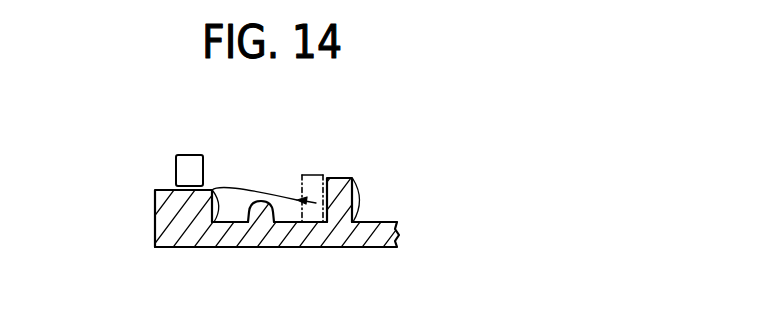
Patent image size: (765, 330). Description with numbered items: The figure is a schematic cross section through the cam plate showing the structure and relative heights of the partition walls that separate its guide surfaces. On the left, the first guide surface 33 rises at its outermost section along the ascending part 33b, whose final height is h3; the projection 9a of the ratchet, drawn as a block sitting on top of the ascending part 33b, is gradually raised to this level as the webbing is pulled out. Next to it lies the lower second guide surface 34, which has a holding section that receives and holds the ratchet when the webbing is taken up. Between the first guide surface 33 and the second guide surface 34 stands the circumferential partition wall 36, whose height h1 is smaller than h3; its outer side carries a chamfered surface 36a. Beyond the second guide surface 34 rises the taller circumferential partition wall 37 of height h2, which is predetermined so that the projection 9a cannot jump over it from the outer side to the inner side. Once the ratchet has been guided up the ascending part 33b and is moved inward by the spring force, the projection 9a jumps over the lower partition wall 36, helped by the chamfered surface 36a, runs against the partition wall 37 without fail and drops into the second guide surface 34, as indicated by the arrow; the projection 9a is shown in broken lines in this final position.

The projection 9a is at (189, 155).
The first guide surface 33 is at (230, 223).
The ascending part 33b is at (155, 205).
The second guide surface 34 is at (297, 223).
The partition wall 36 is at (271, 201).
The chamfered surface 36a is at (252, 223).
The partition wall 37 is at (340, 178).
The height of partition wall 36 h1 is at (290, 216).
The height of partition wall 37 h2 is at (368, 200).
The final height of ascending part h3 is at (228, 206).